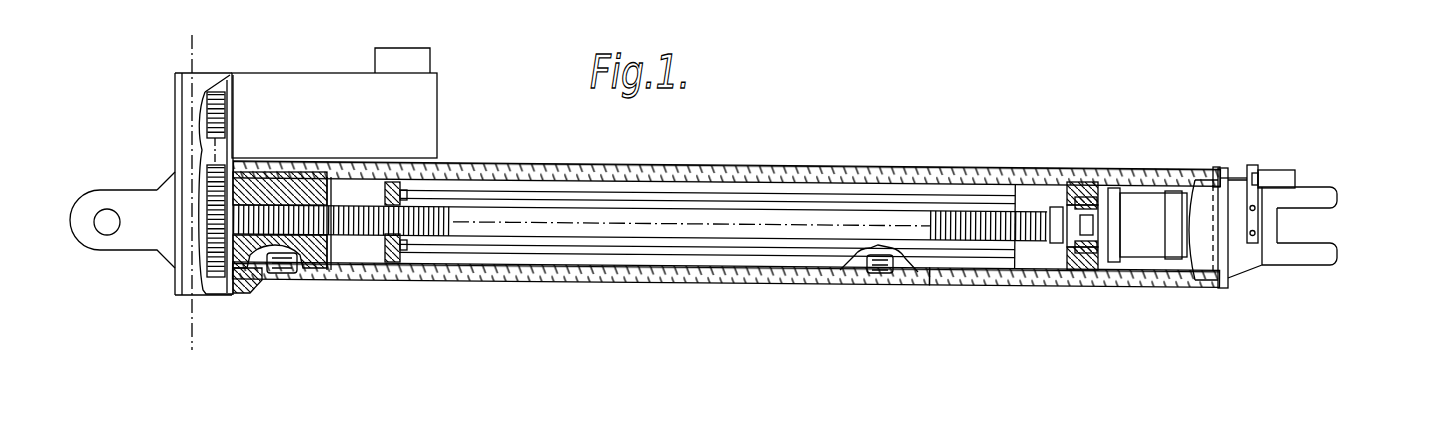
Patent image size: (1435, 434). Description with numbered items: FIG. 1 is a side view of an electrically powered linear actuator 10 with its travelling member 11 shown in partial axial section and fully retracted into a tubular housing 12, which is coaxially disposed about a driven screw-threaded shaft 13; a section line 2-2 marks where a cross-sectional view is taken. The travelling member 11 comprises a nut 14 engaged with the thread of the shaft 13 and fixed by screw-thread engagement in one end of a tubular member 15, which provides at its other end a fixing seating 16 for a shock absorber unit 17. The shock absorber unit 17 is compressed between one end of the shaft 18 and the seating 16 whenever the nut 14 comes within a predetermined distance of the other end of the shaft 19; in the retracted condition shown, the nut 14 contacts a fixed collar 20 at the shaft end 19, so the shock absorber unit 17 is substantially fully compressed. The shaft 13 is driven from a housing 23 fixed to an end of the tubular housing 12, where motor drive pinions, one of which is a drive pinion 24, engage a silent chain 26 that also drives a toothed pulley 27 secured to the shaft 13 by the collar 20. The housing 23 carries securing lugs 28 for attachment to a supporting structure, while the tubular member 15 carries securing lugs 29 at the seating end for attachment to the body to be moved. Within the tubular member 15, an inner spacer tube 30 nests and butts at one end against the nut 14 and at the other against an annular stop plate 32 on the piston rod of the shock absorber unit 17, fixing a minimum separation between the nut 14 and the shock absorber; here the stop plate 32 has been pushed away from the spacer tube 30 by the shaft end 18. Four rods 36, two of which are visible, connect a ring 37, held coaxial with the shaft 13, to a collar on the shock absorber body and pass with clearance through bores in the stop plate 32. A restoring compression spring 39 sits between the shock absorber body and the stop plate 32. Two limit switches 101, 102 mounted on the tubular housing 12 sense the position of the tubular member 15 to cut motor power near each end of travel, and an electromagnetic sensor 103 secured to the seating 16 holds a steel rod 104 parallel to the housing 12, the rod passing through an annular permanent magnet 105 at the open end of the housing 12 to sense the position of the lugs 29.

The section line 2- 2 is at (230, 52).
The electrically powered linear actuator 10 is at (904, 153).
The travelling member 11 is at (1259, 276).
The tubular housing 12 is at (1093, 161).
The screw-threaded shaft 13 is at (705, 206).
The nut 14 is at (332, 243).
The tubular member 15 is at (1045, 180).
The fixing seating 16 is at (1240, 250).
The shock absorber unit 17 is at (1148, 191).
The one end of the shaft 18 is at (1068, 225).
The other end of the shaft 19 is at (245, 205).
The fixed collar 20 is at (272, 285).
The housing 23 is at (253, 74).
The drive pinion 24 is at (203, 113).
The silent chain 26 is at (227, 149).
The toothed pulley 27 is at (207, 200).
The securing lugs 28 is at (118, 248).
The securing lugs 29 is at (1338, 250).
The inner spacer tube 30 is at (958, 263).
The annular stop plate 32 is at (1083, 265).
The rods 36 is at (543, 245).
The ring 37 is at (383, 197).
The restoring compression spring 39 is at (1137, 247).
The limit switch 101 is at (288, 276).
The limit switch 102 is at (878, 275).
The electromagnetic sensor 103 is at (1284, 170).
The steel rod 104 is at (1240, 168).
The annular permanent magnet 105 is at (1217, 166).